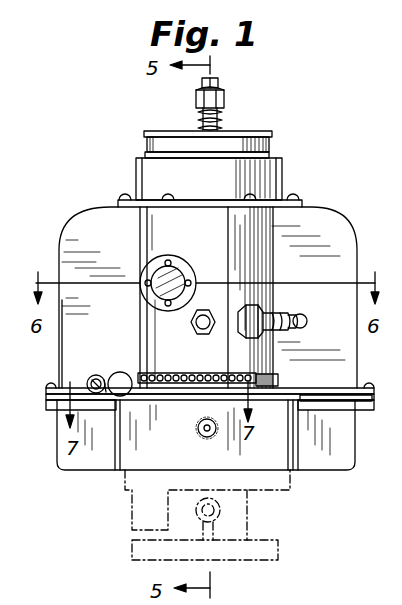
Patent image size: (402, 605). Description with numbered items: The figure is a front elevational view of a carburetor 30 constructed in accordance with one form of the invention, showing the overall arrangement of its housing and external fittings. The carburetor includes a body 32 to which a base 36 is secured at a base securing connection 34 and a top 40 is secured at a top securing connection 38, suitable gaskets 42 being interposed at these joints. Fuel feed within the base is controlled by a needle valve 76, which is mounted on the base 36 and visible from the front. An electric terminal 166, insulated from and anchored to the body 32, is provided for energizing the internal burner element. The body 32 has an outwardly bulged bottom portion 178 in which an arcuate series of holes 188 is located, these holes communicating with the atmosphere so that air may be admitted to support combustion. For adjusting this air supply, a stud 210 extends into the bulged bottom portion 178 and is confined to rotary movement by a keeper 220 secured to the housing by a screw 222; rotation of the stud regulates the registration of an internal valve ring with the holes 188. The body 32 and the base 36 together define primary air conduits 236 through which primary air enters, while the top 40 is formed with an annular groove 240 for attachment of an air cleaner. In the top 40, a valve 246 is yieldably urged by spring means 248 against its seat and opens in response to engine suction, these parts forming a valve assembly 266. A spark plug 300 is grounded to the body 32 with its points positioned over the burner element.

The carburetor 30 is at (78, 212).
The body 32 is at (132, 262).
The base securing connection 34 is at (360, 386).
The base 36 is at (50, 446).
The top securing connection 38 is at (250, 200).
The top 40 is at (140, 174).
The gaskets 42 is at (300, 200).
The needle valve 76 is at (208, 440).
The electric terminal 166 is at (194, 326).
The outwardly bulged bottom portion 178 is at (274, 376).
The holes 188 is at (196, 376).
The stud 210 is at (124, 372).
The keeper 220 is at (106, 376).
The screw 222 is at (96, 375).
The primary air conduits 236 is at (70, 240).
The annular groove 240 is at (272, 146).
The valve 246 is at (218, 83).
The spring means 248 is at (222, 116).
The valve assembly 266 is at (256, 514).
The spark plug 300 is at (290, 310).